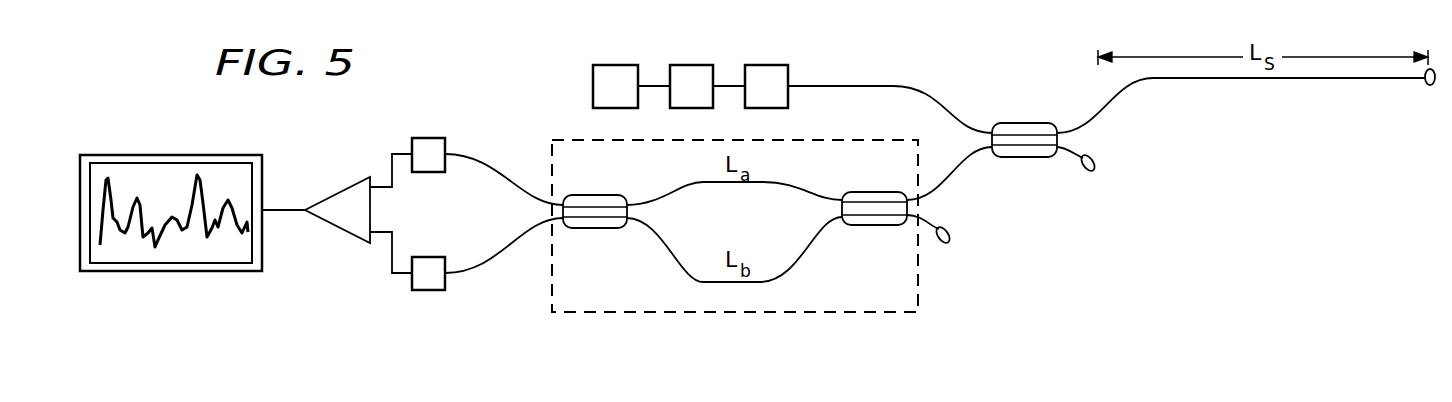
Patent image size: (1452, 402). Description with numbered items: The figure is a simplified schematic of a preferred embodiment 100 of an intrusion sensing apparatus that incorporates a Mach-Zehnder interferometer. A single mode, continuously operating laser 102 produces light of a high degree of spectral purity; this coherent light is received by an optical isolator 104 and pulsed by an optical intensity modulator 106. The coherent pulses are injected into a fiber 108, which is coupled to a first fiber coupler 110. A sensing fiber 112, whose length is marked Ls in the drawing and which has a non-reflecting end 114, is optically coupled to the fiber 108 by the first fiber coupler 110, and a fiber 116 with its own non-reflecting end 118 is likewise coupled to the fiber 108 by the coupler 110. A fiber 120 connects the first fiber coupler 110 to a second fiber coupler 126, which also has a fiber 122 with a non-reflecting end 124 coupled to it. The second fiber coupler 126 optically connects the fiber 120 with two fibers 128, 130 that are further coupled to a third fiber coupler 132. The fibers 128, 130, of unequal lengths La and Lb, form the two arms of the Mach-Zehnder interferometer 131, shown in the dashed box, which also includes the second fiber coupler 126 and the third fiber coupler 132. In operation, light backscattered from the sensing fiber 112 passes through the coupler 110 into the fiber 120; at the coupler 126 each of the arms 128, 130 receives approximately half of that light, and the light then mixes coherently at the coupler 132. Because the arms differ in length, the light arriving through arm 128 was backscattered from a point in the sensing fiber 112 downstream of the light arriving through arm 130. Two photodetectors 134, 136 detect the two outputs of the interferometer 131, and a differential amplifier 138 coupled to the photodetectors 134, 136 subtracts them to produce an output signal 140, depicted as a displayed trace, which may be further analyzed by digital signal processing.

The preferred embodiment 100 is at (478, 57).
The laser 102 is at (612, 65).
The optical isolator 104 is at (690, 65).
The optical intensity modulator 106 is at (763, 65).
The fiber 108 is at (887, 83).
The first fiber coupler 110 is at (1025, 123).
The sensing fiber 112 is at (1188, 80).
The non-reflecting end 114 is at (1428, 86).
The fiber 116 is at (1085, 155).
The non-reflecting end 118 is at (1096, 162).
The fiber 120 is at (967, 163).
The fiber 122 is at (947, 244).
The non-reflecting end 124 is at (936, 226).
The second fiber coupler 126 is at (868, 192).
The fiber 128 is at (672, 191).
The fiber 130 is at (674, 250).
The Mach-Zehnder interferometer 131 is at (890, 298).
The third fiber coupler 132 is at (596, 229).
The photodetector 134 is at (447, 142).
The photodetector 136 is at (447, 283).
The differential amplifier 138 is at (333, 190).
The output signal 140 is at (137, 143).